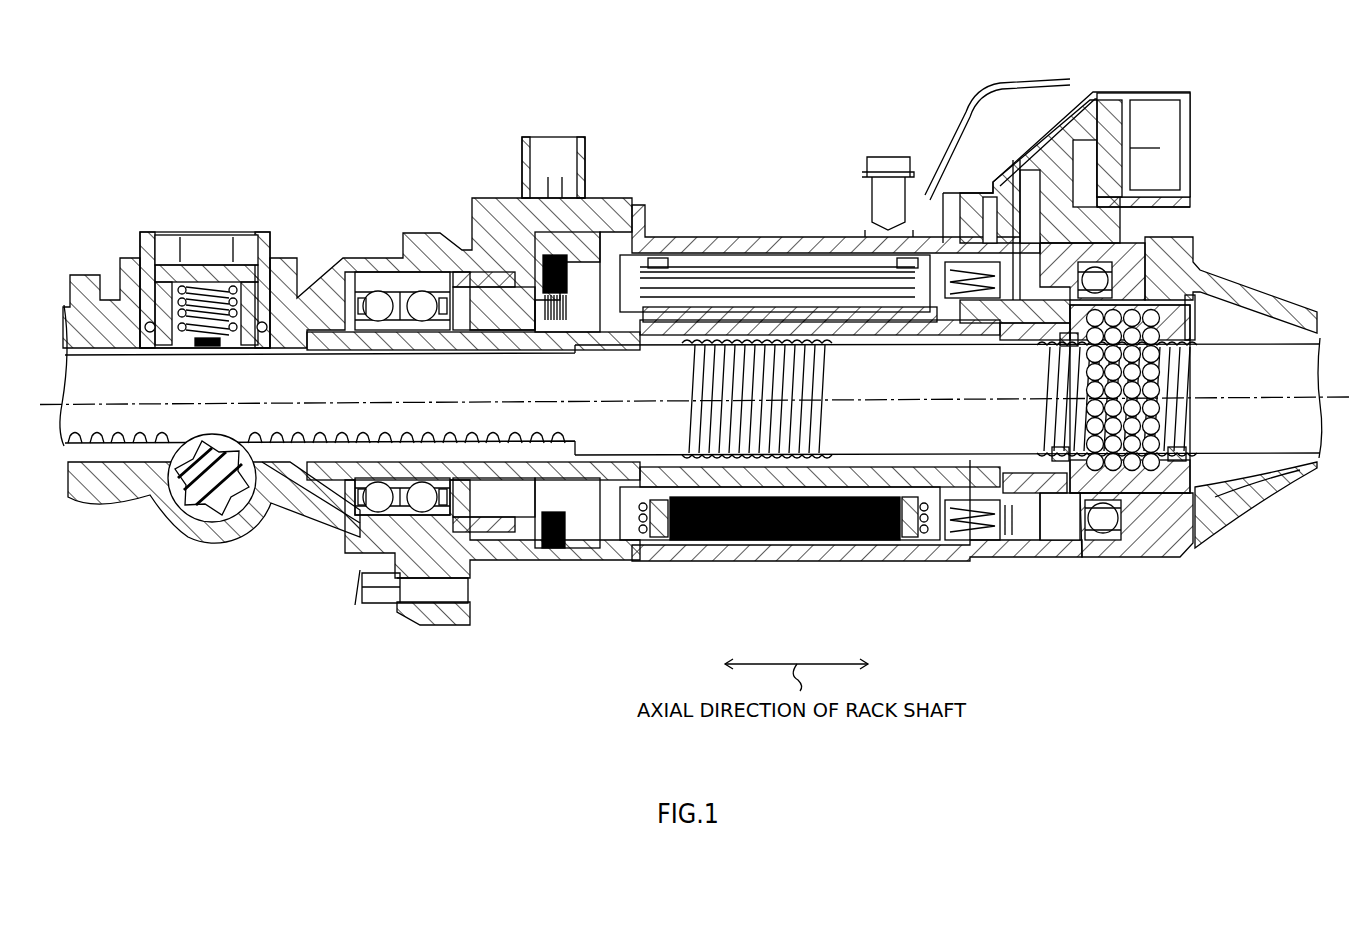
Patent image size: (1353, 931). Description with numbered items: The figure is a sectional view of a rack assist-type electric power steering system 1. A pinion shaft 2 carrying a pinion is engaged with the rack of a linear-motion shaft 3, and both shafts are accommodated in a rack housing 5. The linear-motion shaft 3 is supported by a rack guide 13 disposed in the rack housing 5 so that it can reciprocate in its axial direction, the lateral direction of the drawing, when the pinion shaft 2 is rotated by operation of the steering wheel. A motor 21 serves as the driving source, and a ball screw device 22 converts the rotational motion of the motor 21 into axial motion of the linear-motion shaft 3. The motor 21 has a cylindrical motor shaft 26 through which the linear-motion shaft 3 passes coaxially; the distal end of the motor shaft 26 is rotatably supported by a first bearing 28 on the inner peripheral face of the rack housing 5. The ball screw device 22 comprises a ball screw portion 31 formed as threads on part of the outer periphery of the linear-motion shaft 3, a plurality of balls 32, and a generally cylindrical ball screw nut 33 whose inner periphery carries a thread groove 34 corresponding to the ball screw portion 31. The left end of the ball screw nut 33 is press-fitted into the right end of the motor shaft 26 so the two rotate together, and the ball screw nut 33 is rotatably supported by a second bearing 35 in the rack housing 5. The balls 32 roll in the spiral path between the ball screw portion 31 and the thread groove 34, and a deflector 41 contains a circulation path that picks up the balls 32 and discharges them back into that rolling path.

The electric power steering system 1 is at (218, 123).
The pinion shaft 2 is at (202, 520).
The linear-motion shaft 3 is at (98, 445).
The rack housing 5 is at (420, 232).
The rack guide 13 is at (207, 255).
The motor 21 is at (737, 252).
The ball screw device 22 is at (1186, 302).
The motor shaft 26 is at (621, 338).
The first bearing 28 is at (352, 532).
The ball screw portion 31 is at (1198, 423).
The balls 32 is at (1158, 395).
The ball screw nut 33 is at (1193, 468).
The thread groove 34 is at (1060, 453).
The second bearing 35 is at (1078, 550).
The deflector 41 is at (1117, 245).